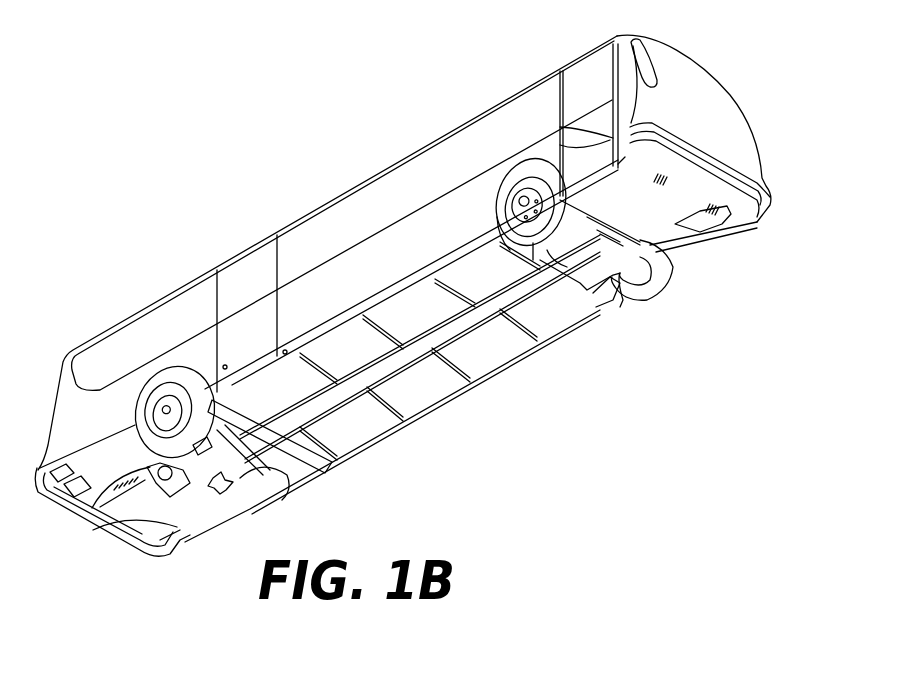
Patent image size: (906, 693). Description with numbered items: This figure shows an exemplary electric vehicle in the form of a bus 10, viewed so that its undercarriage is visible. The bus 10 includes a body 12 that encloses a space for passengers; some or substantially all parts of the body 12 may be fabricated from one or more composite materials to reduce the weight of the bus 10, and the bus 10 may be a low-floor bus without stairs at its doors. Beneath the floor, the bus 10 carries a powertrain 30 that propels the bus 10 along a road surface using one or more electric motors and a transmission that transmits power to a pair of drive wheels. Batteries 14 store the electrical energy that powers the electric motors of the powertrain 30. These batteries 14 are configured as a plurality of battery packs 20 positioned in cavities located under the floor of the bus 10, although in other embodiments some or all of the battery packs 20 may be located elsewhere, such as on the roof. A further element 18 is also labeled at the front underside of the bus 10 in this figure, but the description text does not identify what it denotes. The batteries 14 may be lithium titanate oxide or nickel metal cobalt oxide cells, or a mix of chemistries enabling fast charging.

The bus 10 is at (333, 165).
The body 12 is at (362, 294).
The batteries 14 is at (503, 376).
The front suspension 18 is at (131, 499).
The battery packs 20 is at (485, 358).
The powertrain 30 is at (197, 547).